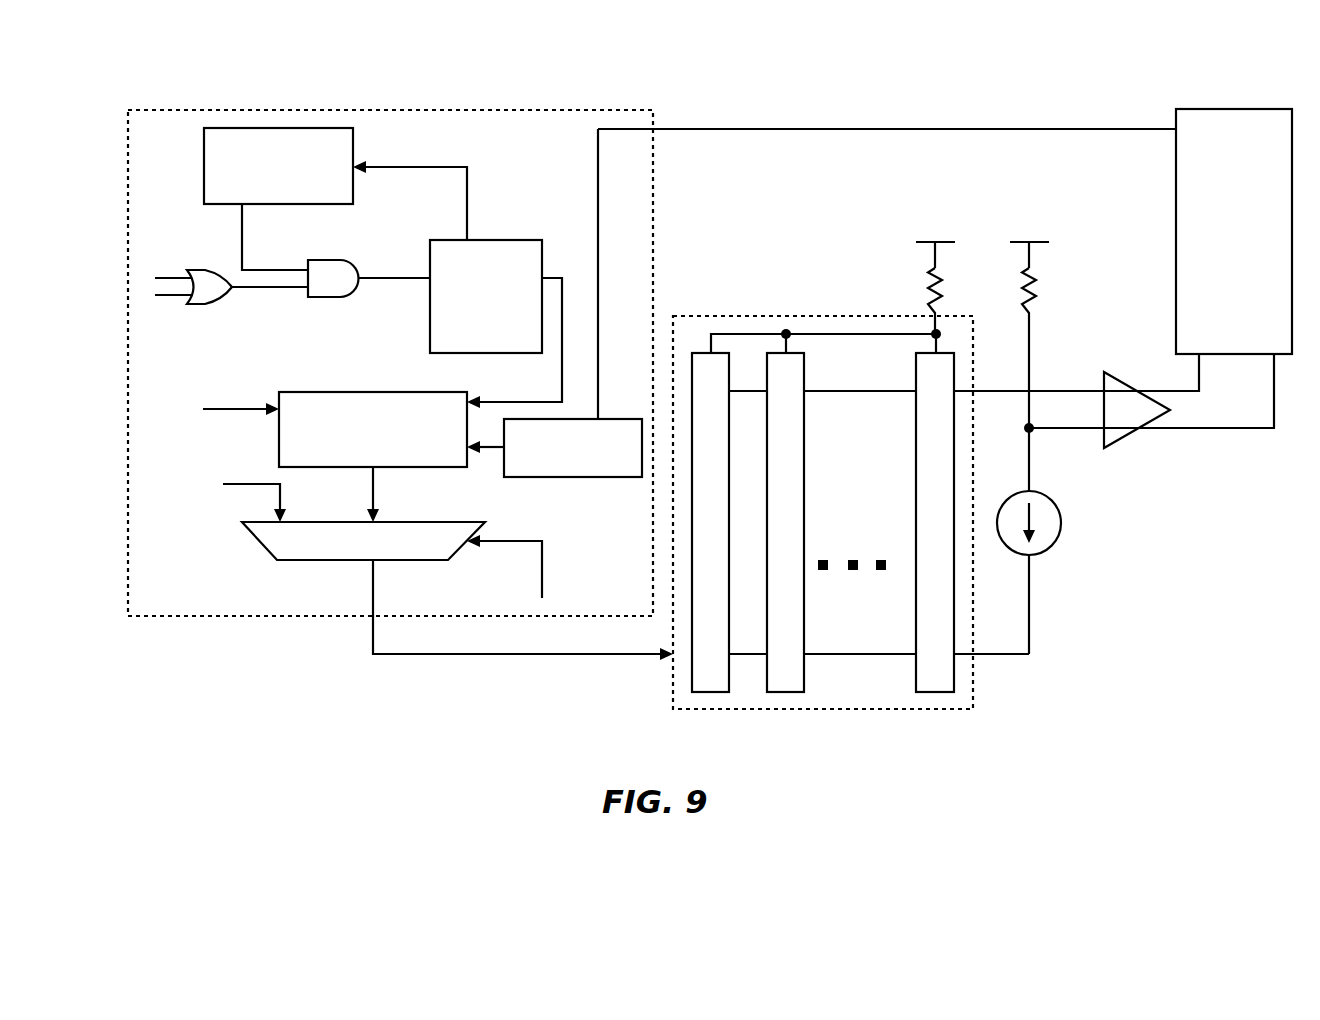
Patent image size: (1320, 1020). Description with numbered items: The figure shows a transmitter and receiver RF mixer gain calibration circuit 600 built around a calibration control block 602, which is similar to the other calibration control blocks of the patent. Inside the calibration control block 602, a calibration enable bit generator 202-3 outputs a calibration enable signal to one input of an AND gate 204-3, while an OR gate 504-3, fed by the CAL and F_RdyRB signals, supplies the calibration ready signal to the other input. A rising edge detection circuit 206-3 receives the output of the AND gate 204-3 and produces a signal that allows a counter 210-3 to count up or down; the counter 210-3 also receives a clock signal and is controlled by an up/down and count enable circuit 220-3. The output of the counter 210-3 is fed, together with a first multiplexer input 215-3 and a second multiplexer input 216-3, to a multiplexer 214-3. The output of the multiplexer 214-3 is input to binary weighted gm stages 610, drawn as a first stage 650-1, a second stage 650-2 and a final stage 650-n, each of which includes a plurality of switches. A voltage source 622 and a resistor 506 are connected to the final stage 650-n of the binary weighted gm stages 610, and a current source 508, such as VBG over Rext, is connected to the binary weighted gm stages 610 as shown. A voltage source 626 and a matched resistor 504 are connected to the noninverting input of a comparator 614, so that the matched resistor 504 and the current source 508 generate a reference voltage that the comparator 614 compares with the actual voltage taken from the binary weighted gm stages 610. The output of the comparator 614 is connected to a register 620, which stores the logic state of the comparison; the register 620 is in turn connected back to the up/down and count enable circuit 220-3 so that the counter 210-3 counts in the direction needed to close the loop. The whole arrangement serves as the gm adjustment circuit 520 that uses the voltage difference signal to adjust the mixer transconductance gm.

The transmitter and receiver RF mixer gain calibration circuit 600 is at (1050, 84).
The calibration control block 602 is at (410, 110).
The calibration enable bit generator 202-3 is at (279, 128).
The AND gate 204-3 is at (337, 259).
The rising edge detection circuit 206-3 is at (487, 240).
The OR gate 504-3 is at (223, 297).
The counter 210-3 is at (370, 392).
The multiplexer input 215-3 is at (234, 485).
The multiplexer 214-3 is at (440, 520).
The multiplexer input 216-3 is at (543, 577).
The up/down and count enable circuit 220-3 is at (557, 477).
The voltage source 622 is at (925, 242).
The voltage source 626 is at (1018, 242).
The resistor 506 is at (927, 288).
The matched resistor 504 is at (1022, 288).
The register 620 is at (1176, 314).
The comparator 614 is at (1122, 439).
The current source 508 is at (1057, 542).
The first stage of binary weighted gm stages 650-1 is at (707, 692).
The second stage of binary weighted gm stages 650-2 is at (806, 522).
The final stage of binary weighted gm stages 650-n is at (954, 673).
The binary weighted gm stages 610 is at (785, 709).
The gm adjustment circuit 520 is at (537, 736).